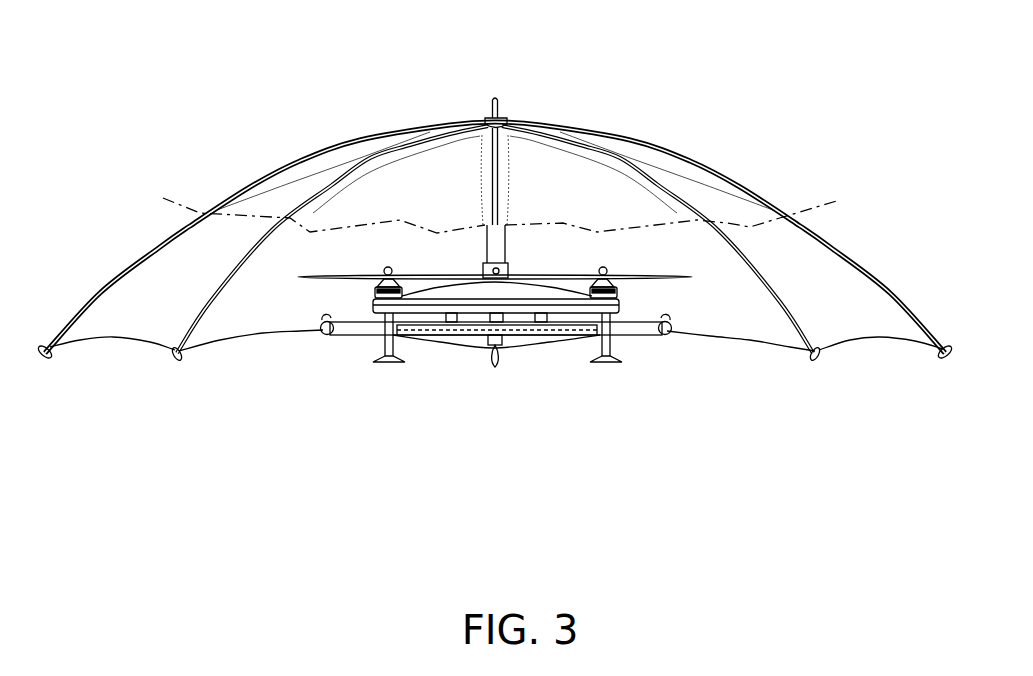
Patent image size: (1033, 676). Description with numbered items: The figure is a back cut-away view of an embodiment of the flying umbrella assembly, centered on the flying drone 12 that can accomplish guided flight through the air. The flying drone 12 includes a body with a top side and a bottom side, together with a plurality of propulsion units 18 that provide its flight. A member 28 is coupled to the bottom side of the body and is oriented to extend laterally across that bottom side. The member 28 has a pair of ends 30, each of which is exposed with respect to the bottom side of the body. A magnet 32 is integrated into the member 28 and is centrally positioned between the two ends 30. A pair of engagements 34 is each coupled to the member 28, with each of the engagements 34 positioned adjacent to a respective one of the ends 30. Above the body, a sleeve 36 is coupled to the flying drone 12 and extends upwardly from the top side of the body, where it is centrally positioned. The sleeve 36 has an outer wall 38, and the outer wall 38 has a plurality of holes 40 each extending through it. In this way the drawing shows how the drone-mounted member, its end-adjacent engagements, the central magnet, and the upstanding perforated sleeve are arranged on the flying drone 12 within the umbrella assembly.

The flying drone 12 is at (486, 286).
The propulsion units 18 is at (390, 268).
The member 28 is at (415, 337).
The ends 30 is at (322, 336).
The magnet 32 is at (435, 330).
The engagements 34 is at (325, 316).
The sleeve 36 is at (510, 267).
The outer wall 38 is at (487, 280).
The holes 40 is at (495, 268).